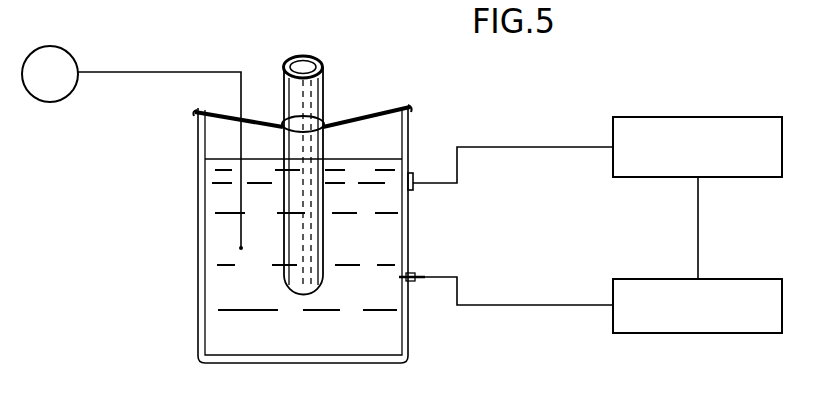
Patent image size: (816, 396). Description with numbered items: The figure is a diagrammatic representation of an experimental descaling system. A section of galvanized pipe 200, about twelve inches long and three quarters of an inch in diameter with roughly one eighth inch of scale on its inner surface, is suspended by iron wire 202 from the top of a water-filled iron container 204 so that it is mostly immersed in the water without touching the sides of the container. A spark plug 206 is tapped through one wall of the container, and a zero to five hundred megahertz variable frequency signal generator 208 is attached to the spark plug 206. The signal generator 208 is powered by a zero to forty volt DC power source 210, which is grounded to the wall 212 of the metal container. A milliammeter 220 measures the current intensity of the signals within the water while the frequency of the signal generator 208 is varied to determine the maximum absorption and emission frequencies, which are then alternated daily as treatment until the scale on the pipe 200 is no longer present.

The section of galvanized pipe 200 is at (323, 70).
The iron wire 202 is at (400, 108).
The iron container 204 is at (198, 248).
The spark plug 206 is at (420, 277).
The variable frequency signal generator 208 is at (688, 333).
The DC power source 210 is at (715, 117).
The wall of the metal container 212 is at (413, 189).
The milliammeter 220 is at (68, 50).